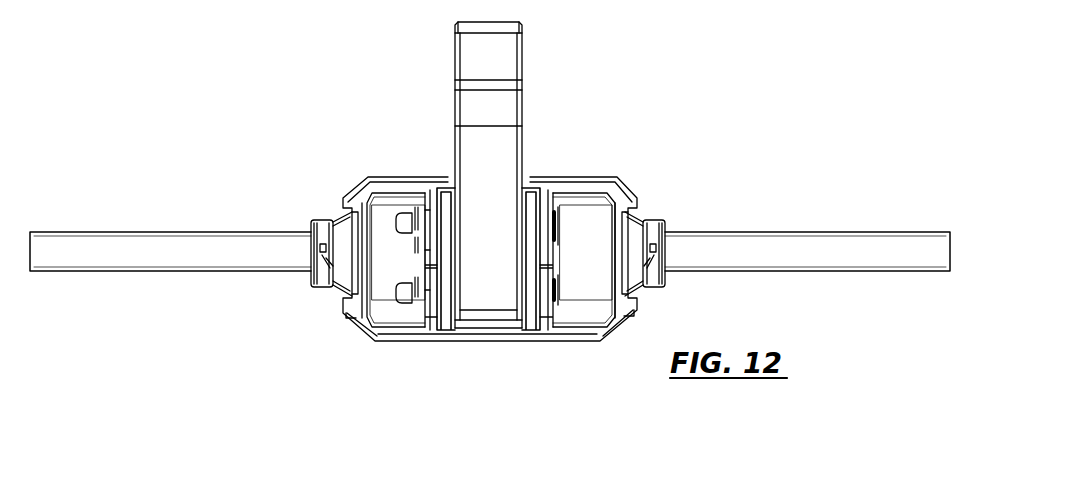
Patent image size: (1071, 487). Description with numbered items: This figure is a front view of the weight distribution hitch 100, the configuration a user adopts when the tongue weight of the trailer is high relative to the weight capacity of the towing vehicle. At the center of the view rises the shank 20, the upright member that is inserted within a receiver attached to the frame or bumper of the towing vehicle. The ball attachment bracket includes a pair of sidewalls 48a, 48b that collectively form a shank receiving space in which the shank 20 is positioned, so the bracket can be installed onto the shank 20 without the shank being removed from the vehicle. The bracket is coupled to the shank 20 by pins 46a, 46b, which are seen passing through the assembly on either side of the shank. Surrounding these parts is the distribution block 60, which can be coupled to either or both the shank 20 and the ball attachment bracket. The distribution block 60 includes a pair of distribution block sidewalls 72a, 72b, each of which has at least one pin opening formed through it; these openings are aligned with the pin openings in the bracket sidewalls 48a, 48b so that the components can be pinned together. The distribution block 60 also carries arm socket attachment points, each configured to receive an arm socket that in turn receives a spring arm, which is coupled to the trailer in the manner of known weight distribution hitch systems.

The weight distribution hitch 100 is at (169, 166).
The distribution block 60 is at (388, 178).
The shank 20 is at (495, 105).
The pin 46a is at (402, 223).
The pin 46b is at (430, 295).
The distribution block sidewall 72a is at (553, 212).
The distribution block sidewall 72b is at (432, 222).
The sidewall 48a is at (450, 290).
The sidewall 48b is at (530, 305).